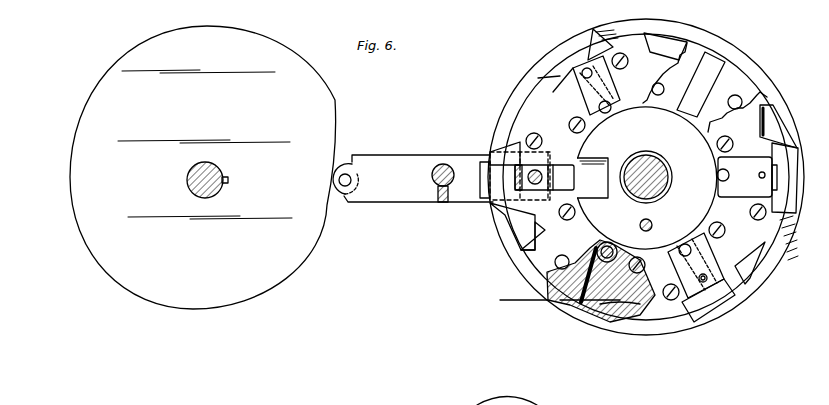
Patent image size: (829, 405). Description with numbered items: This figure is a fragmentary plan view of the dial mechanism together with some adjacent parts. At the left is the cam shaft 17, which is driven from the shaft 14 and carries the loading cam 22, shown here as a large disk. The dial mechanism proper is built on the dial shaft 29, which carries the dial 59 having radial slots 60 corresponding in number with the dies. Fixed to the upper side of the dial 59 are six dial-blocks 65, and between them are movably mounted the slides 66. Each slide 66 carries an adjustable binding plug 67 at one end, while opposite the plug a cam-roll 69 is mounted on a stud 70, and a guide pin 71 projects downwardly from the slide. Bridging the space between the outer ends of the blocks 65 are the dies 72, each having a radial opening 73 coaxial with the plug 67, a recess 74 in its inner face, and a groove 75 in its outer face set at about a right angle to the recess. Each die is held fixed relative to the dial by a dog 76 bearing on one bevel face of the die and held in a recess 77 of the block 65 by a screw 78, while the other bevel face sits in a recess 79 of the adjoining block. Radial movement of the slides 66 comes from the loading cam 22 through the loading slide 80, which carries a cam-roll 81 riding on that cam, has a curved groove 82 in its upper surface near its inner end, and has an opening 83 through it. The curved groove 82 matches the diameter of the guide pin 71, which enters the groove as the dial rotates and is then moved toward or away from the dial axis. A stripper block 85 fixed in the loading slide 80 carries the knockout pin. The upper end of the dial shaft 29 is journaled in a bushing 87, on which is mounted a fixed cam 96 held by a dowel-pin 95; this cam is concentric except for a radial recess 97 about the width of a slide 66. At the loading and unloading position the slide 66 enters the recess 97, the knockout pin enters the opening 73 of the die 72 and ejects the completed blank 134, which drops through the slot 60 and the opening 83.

The shaft 14 is at (603, 33).
The cam shaft 17 is at (187, 181).
The loading cam 22 is at (243, 308).
The dial shaft 29 is at (672, 163).
The dial 59 is at (746, 69).
The radial slot 60 is at (522, 232).
The dial-block 65 is at (656, 143).
The slide 66 is at (578, 75).
The adjustable binding plug 67 is at (592, 292).
The cam-roll 69 is at (617, 114).
The stud 70 is at (578, 108).
The guide pin 71 is at (495, 208).
The die 72 is at (572, 45).
The radial opening 73 is at (590, 305).
The recess 74 is at (492, 148).
The groove 75 is at (600, 322).
The dog 76 is at (572, 92).
The recess 77 is at (540, 232).
The screw 78 is at (620, 322).
The recess 79 is at (512, 137).
The loading slide 80 is at (405, 203).
The cam-roll 81 is at (342, 198).
The curved groove 82 is at (548, 183).
The opening 83 is at (440, 204).
The stripper block 85 is at (438, 163).
The bushing 87 is at (657, 170).
The dowel-pin 95 is at (642, 222).
The fixed cam 96 is at (404, 317).
The radial recess 97 is at (593, 178).
The blank 134 is at (546, 300).